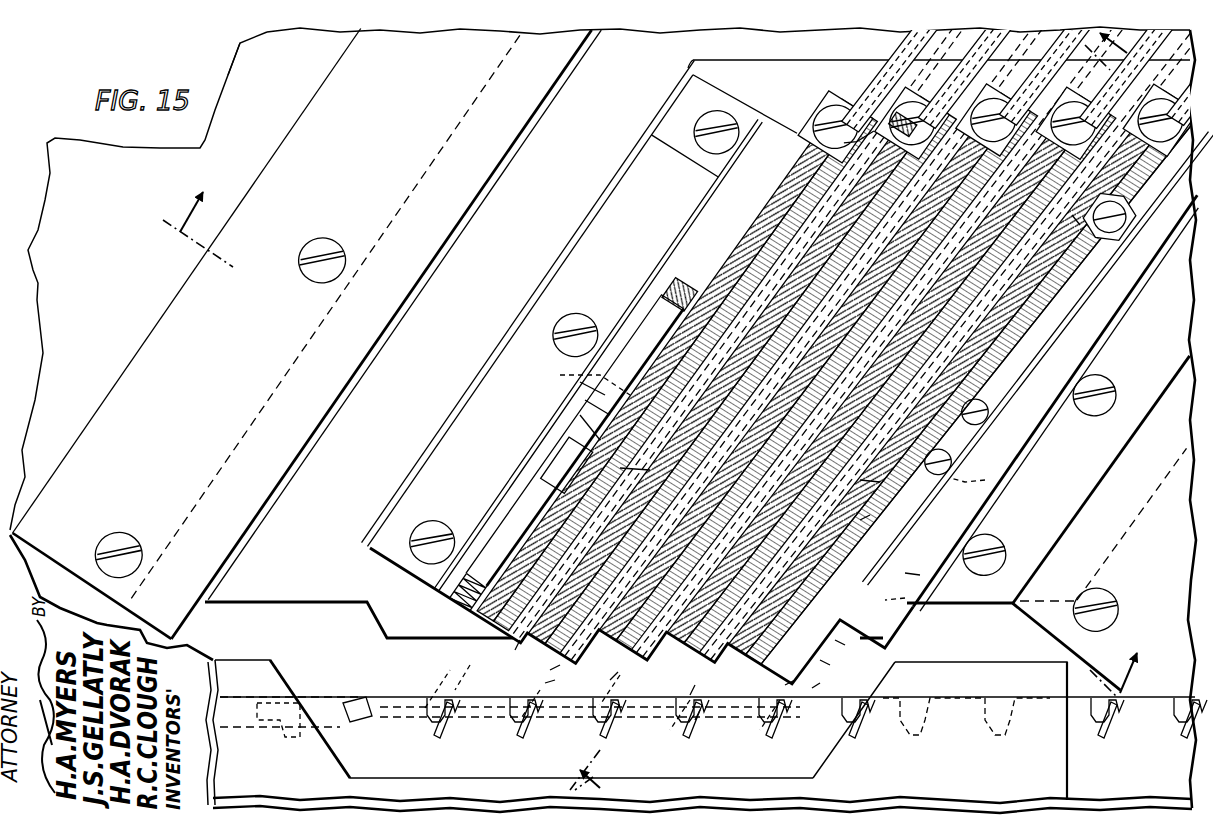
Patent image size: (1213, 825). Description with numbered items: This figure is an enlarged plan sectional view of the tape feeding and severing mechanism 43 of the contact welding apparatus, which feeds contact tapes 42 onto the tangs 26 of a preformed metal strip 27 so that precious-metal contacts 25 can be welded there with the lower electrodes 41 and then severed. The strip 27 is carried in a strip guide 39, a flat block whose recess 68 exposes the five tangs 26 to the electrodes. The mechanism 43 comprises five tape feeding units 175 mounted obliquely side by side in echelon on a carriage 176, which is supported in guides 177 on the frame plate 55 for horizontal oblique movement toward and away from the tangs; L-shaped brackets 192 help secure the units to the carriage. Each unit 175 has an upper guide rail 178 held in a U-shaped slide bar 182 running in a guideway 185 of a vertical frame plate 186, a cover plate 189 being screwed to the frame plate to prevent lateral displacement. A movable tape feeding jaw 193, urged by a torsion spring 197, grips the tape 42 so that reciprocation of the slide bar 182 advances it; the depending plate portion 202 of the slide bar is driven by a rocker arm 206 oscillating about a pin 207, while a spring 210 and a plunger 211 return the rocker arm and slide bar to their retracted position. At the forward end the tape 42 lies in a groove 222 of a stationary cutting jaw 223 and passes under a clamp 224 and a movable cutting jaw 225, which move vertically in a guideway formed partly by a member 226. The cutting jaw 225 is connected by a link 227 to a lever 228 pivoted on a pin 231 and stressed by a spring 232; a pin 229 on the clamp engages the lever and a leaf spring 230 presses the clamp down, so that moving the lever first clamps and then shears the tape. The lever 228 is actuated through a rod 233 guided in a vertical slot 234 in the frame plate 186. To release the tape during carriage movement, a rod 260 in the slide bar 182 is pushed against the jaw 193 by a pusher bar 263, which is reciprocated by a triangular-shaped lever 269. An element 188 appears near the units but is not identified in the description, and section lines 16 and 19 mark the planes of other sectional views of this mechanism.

The section line 16- 16 is at (655, 445).
The section line 19- 19 is at (848, 411).
The contacts 25 is at (340, 725).
The tangs 26 is at (430, 725).
The preformed metal strip 27 is at (700, 696).
The strip guide 39 is at (255, 660).
The lower electrodes 41 is at (450, 690).
The contact tapes 42 is at (975, 50).
The tape feeding and severing mechanism 43 is at (680, 218).
The frame plate 55 is at (240, 65).
The recess 68 is at (305, 695).
The tape feeding units 175 is at (690, 262).
The carriage 176 is at (518, 163).
The guides 177 is at (160, 340).
The upper guide rail 178 is at (1135, 105).
The slide bar 182 is at (740, 340).
The guideway 185 is at (605, 650).
The frame plate 186 is at (1060, 165).
The end plate 188 is at (515, 650).
The cover plate 189 is at (1080, 225).
The L-shaped brackets 192 is at (580, 382).
The movable tape feeding jaw 193 is at (620, 468).
The torsion spring 197 is at (870, 515).
The plate portion 202 is at (585, 400).
The rocker arm 206 is at (664, 318).
The pin 207 is at (571, 369).
The spring 210 is at (500, 545).
The plunger 211 is at (580, 415).
The groove 222 is at (550, 670).
The stationary cutting jaw 223 is at (545, 683).
The clamp 224 is at (830, 665).
The movable cutting jaw 225 is at (695, 720).
The member 226 is at (695, 685).
The link 227 is at (820, 683).
The lever 228 is at (1075, 385).
The pin 229 is at (845, 645).
The leaf spring 230 is at (920, 575).
The pin 231 is at (985, 480).
The spring 232 is at (905, 598).
The rod 233 is at (790, 140).
The vertical slot 234 is at (745, 205).
The rod 260 is at (770, 290).
The pusher bar 263 is at (930, 105).
The triangular-shaped lever 269 is at (870, 120).